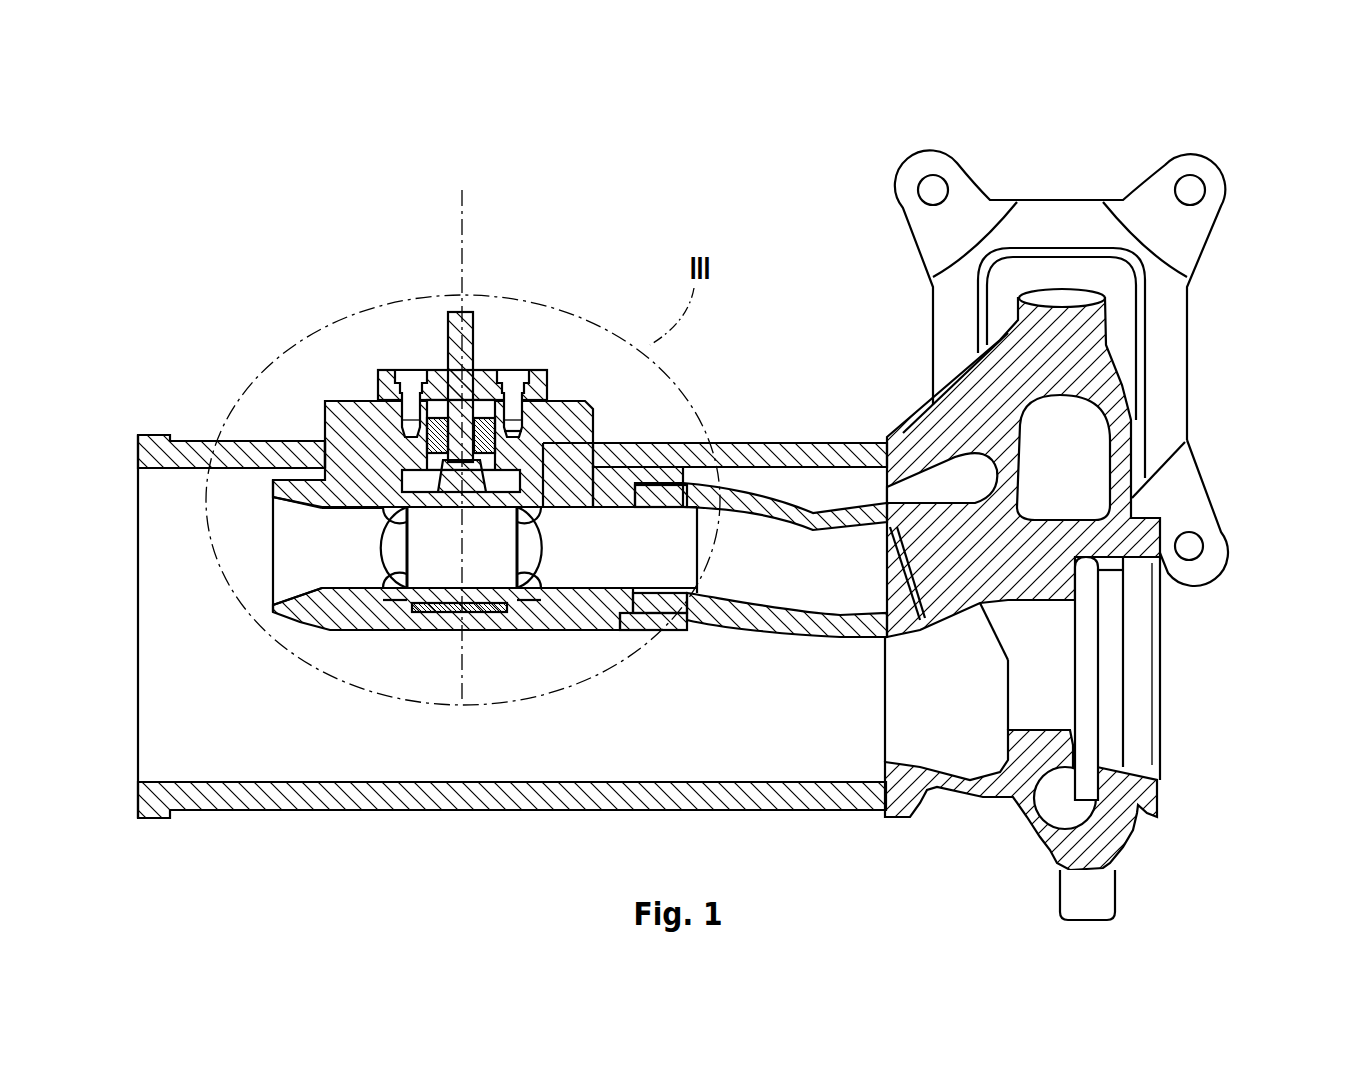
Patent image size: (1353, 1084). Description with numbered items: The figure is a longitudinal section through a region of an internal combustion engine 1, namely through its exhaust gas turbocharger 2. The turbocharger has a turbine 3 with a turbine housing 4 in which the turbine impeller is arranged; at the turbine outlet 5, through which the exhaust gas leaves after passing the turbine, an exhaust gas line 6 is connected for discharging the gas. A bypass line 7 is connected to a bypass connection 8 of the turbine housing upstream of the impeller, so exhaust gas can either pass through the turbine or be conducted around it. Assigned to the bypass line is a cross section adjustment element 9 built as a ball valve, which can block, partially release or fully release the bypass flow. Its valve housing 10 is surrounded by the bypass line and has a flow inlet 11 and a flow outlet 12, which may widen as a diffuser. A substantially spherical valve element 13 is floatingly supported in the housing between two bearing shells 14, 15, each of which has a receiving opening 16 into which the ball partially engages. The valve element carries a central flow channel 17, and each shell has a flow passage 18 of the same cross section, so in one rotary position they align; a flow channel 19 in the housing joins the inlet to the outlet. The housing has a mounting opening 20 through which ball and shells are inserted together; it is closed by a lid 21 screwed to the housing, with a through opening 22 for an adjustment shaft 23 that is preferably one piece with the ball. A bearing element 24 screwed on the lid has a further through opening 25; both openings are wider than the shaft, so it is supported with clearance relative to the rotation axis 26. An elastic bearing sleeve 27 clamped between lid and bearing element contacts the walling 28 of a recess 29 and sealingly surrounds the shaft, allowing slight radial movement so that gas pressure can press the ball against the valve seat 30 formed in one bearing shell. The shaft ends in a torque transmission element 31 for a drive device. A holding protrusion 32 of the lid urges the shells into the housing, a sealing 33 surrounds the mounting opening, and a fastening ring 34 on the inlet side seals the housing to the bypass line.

The internal combustion engine 1 is at (190, 222).
The exhaust gas turbocharger 2 is at (1234, 160).
The turbine 3 is at (1205, 376).
The turbine housing 4 is at (1134, 432).
The turbine outlet 5 is at (885, 693).
The exhaust gas line 6 is at (758, 440).
The bypass line 7 is at (810, 498).
The bypass connection 8 is at (902, 567).
The cross section adjustment element 9 is at (578, 300).
The valve housing 10 is at (320, 614).
The flow inlet 11 is at (703, 544).
The flow outlet 12 is at (272, 546).
The valve element 13 is at (477, 615).
The bearing shell 14 is at (391, 608).
The bearing shell 15 is at (533, 608).
The receiving opening 16 is at (403, 520).
The flow channel 17 is at (470, 560).
The flow passage 18 is at (398, 570).
The flow channel 19 is at (286, 560).
The mounting opening 20 is at (568, 432).
The lid 21 is at (338, 400).
The through opening 22 is at (437, 508).
The adjustment shaft 23 is at (434, 345).
The bearing element 24 is at (385, 370).
The further through opening 25 is at (472, 352).
The rotation axis 26 is at (462, 215).
The bearing sleeve 27 is at (525, 430).
The walling 28 is at (415, 372).
The recess 29 is at (505, 372).
The valve seat 30 is at (430, 603).
The torque transmission element 31 is at (468, 312).
The holding protrusion 32 is at (558, 470).
The sealing 33 is at (325, 440).
The fastening ring 34 is at (657, 614).